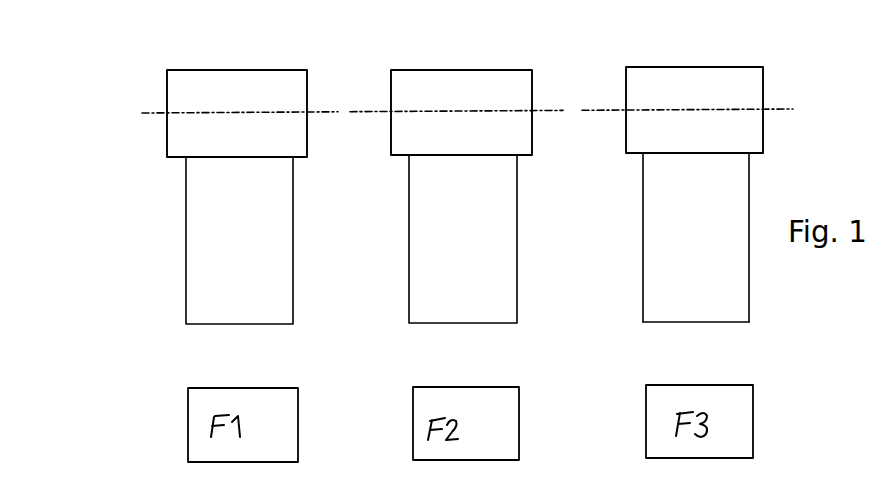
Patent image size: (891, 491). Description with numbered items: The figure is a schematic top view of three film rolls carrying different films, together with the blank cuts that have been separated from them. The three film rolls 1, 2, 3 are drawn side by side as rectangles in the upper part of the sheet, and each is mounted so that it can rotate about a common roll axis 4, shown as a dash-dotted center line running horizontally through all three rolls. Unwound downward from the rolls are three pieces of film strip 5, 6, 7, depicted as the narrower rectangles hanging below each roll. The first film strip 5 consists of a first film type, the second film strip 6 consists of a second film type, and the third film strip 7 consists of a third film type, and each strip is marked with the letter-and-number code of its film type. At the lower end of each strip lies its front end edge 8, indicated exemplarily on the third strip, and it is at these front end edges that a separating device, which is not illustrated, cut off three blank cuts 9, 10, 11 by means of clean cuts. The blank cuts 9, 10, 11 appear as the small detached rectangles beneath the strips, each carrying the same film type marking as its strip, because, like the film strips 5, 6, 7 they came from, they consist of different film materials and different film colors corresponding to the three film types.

The first film roll 1 is at (268, 85).
The second film roll 2 is at (483, 85).
The third film roll 3 is at (730, 78).
The roll axis 4 is at (787, 100).
The first film strip 5 is at (280, 275).
The second film strip 6 is at (498, 277).
The third film strip 7 is at (740, 282).
The front end edge 8 is at (732, 325).
The first blank cut 9 is at (295, 437).
The second blank cut 10 is at (517, 440).
The third blank cut 11 is at (800, 452).